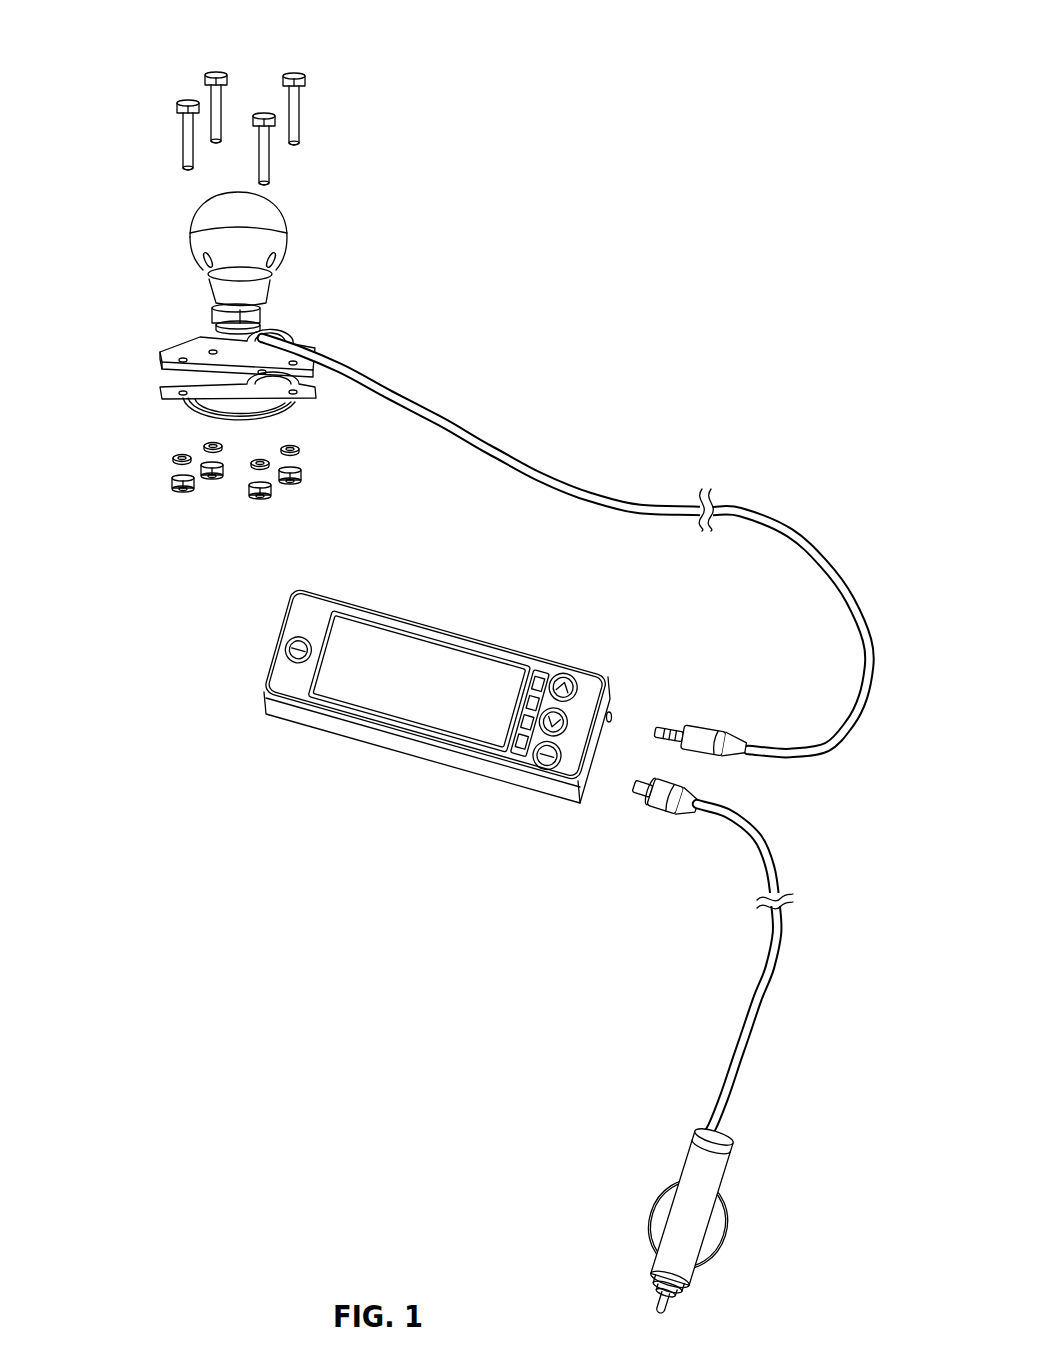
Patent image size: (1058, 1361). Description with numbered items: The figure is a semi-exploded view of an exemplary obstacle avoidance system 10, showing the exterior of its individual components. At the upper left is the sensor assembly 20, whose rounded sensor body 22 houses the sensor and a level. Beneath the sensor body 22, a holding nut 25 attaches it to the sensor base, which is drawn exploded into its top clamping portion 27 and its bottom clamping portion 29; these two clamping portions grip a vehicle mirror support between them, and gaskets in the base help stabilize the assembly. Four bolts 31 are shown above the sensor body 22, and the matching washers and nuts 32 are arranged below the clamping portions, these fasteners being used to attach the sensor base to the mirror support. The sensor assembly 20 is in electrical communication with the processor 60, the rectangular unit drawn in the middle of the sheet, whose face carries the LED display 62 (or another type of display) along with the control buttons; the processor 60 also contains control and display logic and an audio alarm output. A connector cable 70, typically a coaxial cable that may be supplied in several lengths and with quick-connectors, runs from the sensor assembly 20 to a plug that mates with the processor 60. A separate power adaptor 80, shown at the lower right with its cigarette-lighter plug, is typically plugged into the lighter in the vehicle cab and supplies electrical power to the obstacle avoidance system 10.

The obstacle avoidance system 10 is at (548, 46).
The sensor assembly 20 is at (148, 224).
The sensor body 22 is at (278, 223).
The holding nut 25 is at (272, 315).
The top clamping portion 27 is at (170, 344).
The bottom clamping portion 29 is at (170, 402).
The bolts 31 is at (186, 100).
The washers and nuts 32 is at (173, 461).
The processor 60 is at (469, 778).
The LED display 62 is at (423, 697).
The connector cable 70 is at (541, 477).
The power adaptor 80 is at (722, 1168).